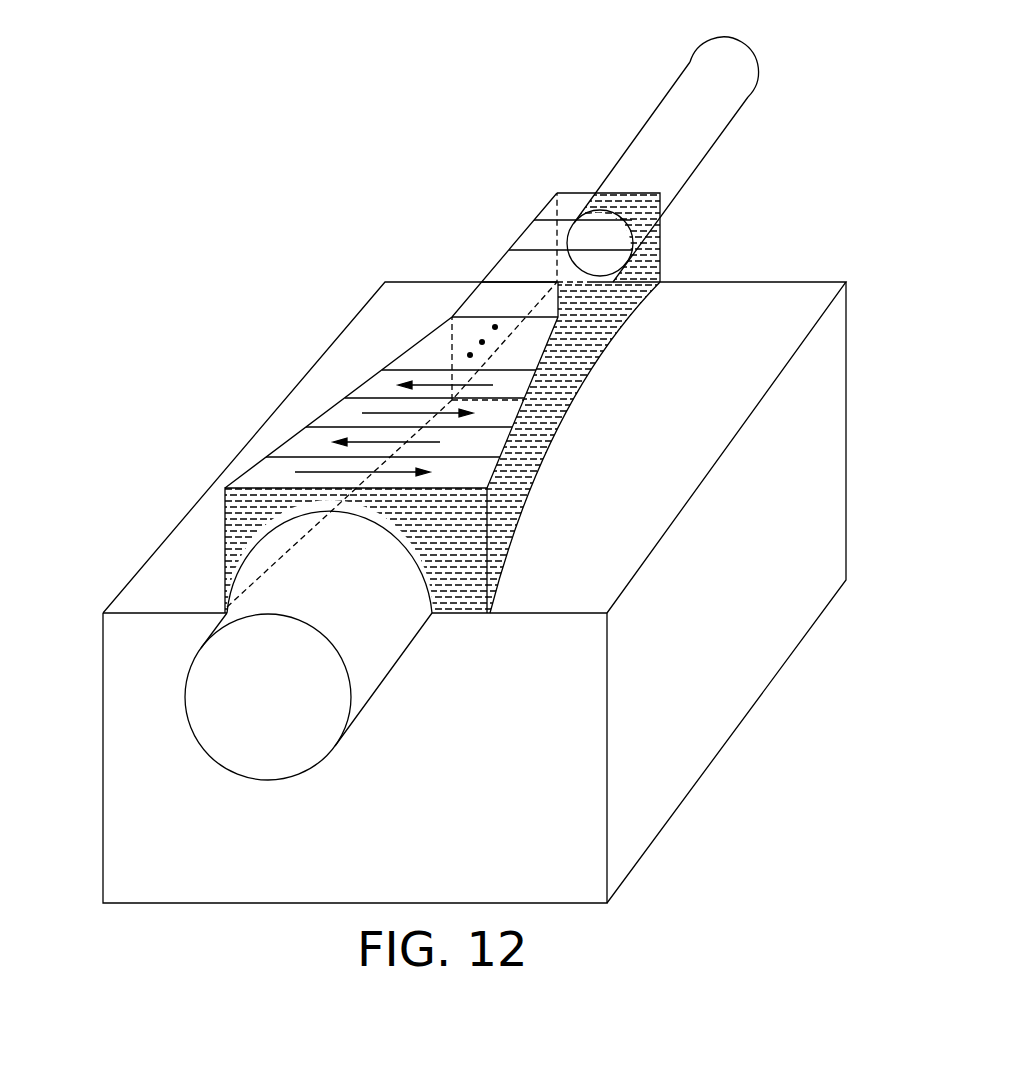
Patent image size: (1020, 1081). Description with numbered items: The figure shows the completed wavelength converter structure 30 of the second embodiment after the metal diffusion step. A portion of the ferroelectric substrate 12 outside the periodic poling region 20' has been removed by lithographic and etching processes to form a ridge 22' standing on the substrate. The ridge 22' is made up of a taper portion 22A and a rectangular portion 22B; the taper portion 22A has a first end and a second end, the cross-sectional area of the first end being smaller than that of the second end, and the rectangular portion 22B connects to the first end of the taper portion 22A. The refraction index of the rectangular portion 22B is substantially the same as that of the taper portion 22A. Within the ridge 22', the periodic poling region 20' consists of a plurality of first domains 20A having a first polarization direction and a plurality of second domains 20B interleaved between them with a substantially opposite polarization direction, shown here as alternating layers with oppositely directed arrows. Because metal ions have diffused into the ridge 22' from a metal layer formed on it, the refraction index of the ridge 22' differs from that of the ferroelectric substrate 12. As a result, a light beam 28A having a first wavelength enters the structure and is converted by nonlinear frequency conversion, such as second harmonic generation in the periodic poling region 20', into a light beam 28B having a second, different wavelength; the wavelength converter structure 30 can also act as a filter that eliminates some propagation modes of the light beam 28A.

The ferroelectric substrate 12 is at (510, 797).
The periodic poling region 20' is at (354, 403).
The first domains 20A is at (247, 473).
The second domains 20B is at (290, 447).
The ridge 22' is at (443, 335).
The taper portion 22A is at (414, 343).
The rectangular portion 22B is at (534, 221).
The light beam 28A is at (253, 607).
The light beam 28B is at (705, 133).
The wavelength converter structure 30 is at (193, 282).